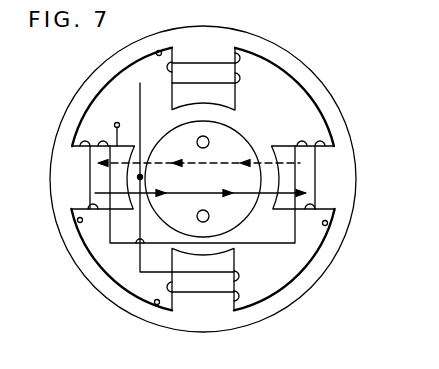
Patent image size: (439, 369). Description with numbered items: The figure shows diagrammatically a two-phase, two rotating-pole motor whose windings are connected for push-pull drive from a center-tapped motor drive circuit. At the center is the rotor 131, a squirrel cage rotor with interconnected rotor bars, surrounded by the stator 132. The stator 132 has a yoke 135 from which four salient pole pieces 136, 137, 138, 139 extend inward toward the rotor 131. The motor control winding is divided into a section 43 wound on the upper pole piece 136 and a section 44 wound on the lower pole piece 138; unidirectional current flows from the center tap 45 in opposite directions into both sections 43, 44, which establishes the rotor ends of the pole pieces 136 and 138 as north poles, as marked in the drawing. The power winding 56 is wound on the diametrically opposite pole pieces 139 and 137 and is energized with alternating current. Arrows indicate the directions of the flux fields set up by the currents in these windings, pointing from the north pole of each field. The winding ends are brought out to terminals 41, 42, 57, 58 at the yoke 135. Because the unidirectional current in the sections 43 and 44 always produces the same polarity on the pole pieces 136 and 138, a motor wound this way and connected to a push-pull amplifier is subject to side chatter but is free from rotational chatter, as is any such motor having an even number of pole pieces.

The stator 132 is at (217, 27).
The yoke 135 is at (305, 73).
The pole piece 136 is at (217, 58).
The pole piece 137 is at (344, 185).
The pole piece 138 is at (219, 314).
The pole piece 139 is at (86, 184).
The rotor 131 is at (216, 186).
The winding terminal 41 is at (157, 55).
The winding terminal 42 is at (156, 300).
The winding section 43 is at (240, 78).
The winding section 44 is at (239, 278).
The center tap 45 is at (119, 124).
The power winding 56 is at (103, 141).
The winding terminal 57 is at (81, 222).
The winding terminal 58 is at (324, 225).